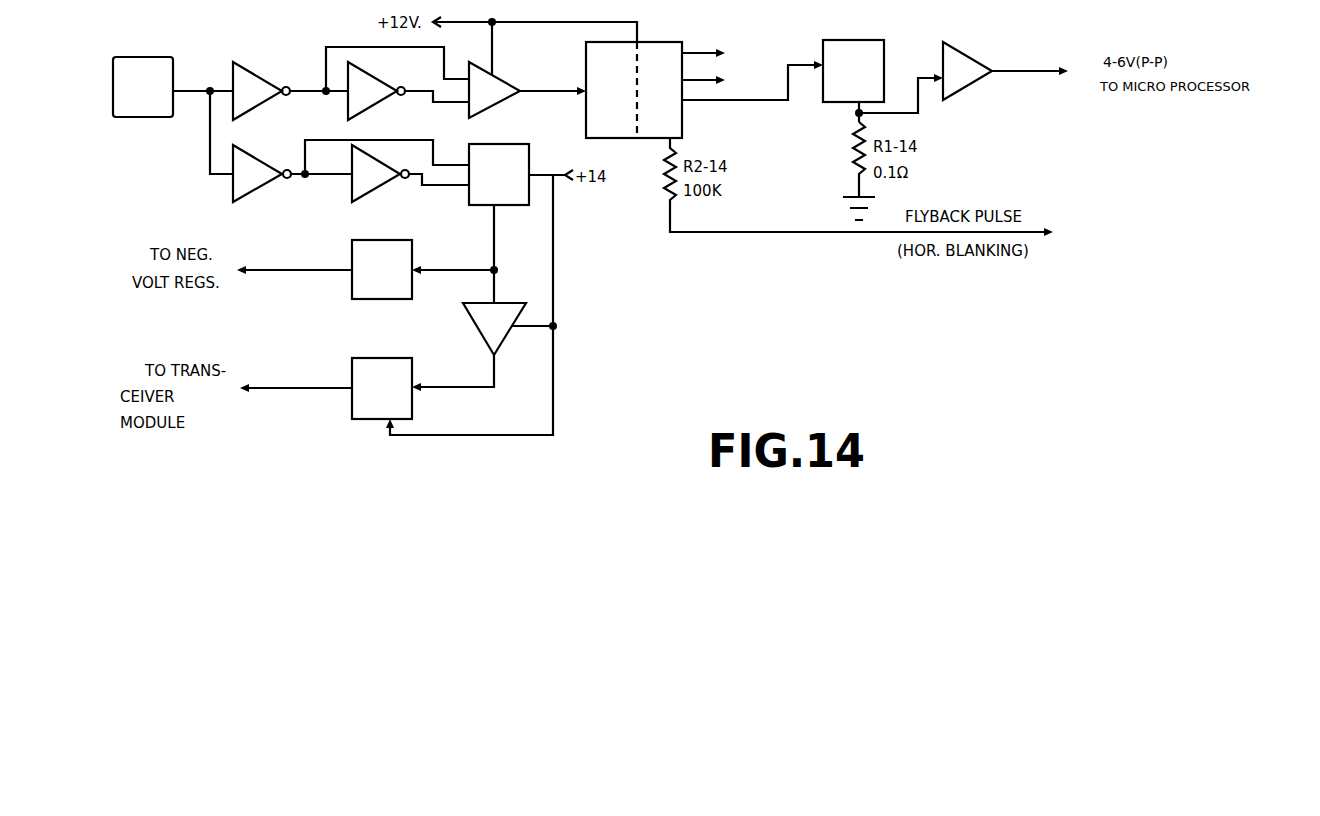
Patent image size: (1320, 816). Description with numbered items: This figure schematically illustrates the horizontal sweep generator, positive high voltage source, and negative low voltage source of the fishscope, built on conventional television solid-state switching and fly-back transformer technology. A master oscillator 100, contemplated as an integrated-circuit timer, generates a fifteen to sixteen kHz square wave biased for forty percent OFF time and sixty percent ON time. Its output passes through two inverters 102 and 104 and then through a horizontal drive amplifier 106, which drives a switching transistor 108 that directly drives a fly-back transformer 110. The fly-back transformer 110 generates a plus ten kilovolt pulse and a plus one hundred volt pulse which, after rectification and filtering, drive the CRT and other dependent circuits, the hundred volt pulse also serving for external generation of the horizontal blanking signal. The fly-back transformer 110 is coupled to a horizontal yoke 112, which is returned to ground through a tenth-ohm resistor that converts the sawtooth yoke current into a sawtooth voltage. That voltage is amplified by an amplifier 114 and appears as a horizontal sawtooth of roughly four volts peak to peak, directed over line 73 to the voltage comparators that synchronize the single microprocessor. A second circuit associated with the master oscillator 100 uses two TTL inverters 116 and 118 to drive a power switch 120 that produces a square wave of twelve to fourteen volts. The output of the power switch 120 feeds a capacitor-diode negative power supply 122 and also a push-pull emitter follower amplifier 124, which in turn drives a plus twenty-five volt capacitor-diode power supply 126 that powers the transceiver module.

The master oscillator 100 is at (170, 57).
The inverter 102 is at (258, 64).
The inverter 104 is at (380, 60).
The horizontal drive amplifier 106 is at (500, 75).
The switching transistor 108 is at (622, 138).
The fly-back transformer 110 is at (682, 120).
The horizontal yoke 112 is at (883, 41).
The amplifier 114 is at (975, 46).
The line 73 is at (1045, 68).
The TTL inverter 116 is at (258, 190).
The TTL inverter 118 is at (378, 190).
The power switch 120 is at (545, 235).
The capacitor-diode negative power supply 122 is at (411, 246).
The push-pull emitter follower amplifier 124 is at (470, 328).
The +25 volt capacitor-diode power supply 126 is at (413, 400).